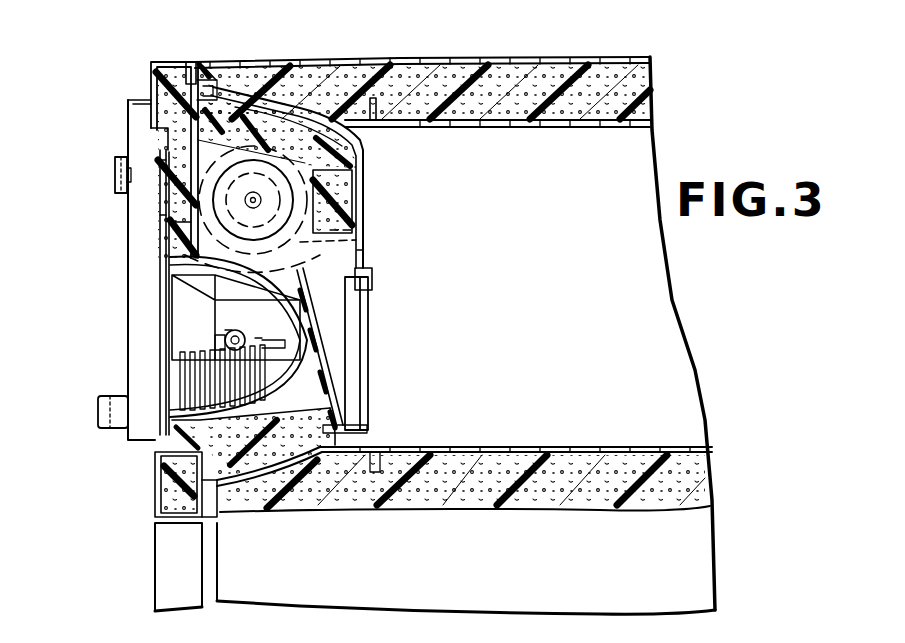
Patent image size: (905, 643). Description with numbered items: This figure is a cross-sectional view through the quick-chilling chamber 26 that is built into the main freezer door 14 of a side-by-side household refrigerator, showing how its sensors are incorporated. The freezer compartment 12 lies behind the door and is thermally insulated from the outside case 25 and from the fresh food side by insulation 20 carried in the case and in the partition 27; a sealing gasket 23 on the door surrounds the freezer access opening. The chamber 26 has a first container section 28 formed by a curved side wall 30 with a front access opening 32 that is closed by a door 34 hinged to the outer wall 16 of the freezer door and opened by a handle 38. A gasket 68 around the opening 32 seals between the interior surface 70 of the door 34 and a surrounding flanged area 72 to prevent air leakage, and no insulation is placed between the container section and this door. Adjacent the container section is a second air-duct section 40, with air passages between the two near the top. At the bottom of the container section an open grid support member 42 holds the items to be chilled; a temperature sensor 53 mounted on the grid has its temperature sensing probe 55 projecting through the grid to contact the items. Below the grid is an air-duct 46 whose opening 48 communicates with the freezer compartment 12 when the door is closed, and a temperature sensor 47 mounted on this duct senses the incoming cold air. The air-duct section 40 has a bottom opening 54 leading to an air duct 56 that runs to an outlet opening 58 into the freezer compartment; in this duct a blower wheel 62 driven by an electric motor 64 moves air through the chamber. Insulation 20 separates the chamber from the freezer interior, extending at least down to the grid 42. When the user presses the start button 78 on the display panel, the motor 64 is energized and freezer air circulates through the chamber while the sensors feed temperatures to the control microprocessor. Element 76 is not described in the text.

The freezer compartment 12 is at (578, 275).
The main freezer door 14 is at (143, 83).
The outer wall 16 is at (155, 500).
The thermal insulation 20 is at (262, 118).
The sealing gasket 23 is at (205, 64).
The outside case 25 is at (372, 58).
The quick-chilling chamber 26 is at (380, 262).
The partition 27 is at (477, 447).
The first container section 28 is at (178, 276).
The curved side wall 30 is at (183, 262).
The access opening 32 is at (166, 320).
The door 34 is at (128, 378).
The handle 38 is at (98, 420).
The second air-duct section 40 is at (300, 190).
The open grid support member 42 is at (180, 405).
The air-duct 46 is at (198, 340).
The temperature sensor 47 is at (270, 338).
The opening 48 is at (290, 352).
The temperature sensor 53 is at (229, 322).
The opening 54 is at (180, 240).
The temperature sensing probe 55 is at (248, 346).
The air duct 56 is at (368, 145).
The outlet opening 58 is at (370, 390).
The blower wheel 62 is at (360, 236).
The electric motor 64 is at (300, 207).
The gasket 68 is at (160, 143).
The interior surface 70 is at (160, 222).
The flanged area 72 is at (167, 190).
The switch 76 is at (104, 184).
The start button 78 is at (115, 163).